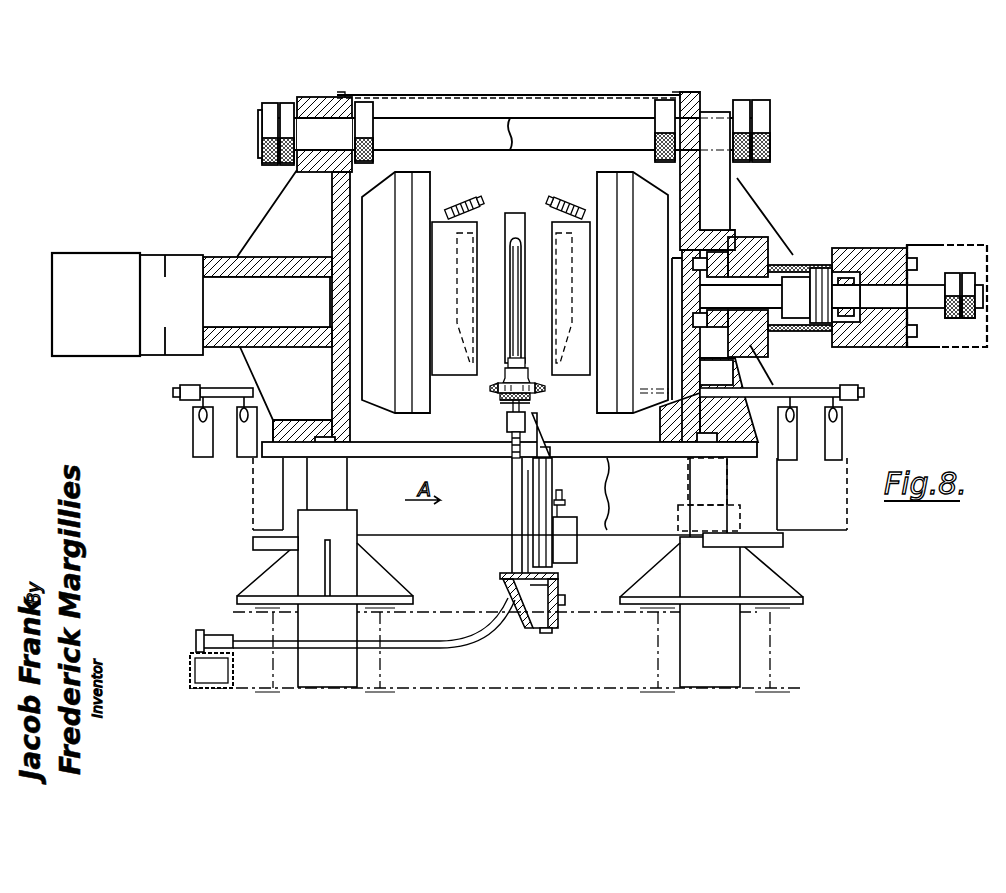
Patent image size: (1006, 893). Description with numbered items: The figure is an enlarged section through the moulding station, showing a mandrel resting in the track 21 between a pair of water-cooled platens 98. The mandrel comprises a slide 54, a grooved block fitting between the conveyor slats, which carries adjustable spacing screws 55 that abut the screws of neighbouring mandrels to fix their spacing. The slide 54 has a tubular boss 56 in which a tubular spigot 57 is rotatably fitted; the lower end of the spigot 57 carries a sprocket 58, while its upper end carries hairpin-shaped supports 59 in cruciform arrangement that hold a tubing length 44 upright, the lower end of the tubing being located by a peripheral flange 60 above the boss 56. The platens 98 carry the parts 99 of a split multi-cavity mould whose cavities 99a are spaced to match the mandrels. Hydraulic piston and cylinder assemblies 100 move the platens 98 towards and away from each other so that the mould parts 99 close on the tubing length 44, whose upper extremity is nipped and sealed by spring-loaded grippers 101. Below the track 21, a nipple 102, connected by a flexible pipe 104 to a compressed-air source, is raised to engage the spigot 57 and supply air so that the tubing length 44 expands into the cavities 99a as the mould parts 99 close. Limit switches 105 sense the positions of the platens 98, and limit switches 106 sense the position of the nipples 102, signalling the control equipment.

The track 21 is at (537, 390).
The tubing length 44 is at (520, 215).
The slide 54 is at (530, 398).
The adjustable spacing screw 55 is at (531, 374).
The tubular boss 56 is at (498, 392).
The tubular spigot 57 is at (514, 416).
The sprocket 58 is at (512, 400).
The hairpin-shaped support 59 is at (510, 248).
The peripheral flange 60 is at (522, 360).
The water-cooled platen 98 is at (420, 215).
The mould part 99 is at (452, 362).
The mould cavity 99a is at (563, 308).
The hydraulic piston and cylinder assembly 100 is at (152, 255).
The spring-loaded gripper 101 is at (478, 204).
The nipple 102 is at (516, 442).
The flexible pipe 104 is at (518, 510).
The limit switch 105 is at (250, 437).
The limit switch 106 is at (566, 549).